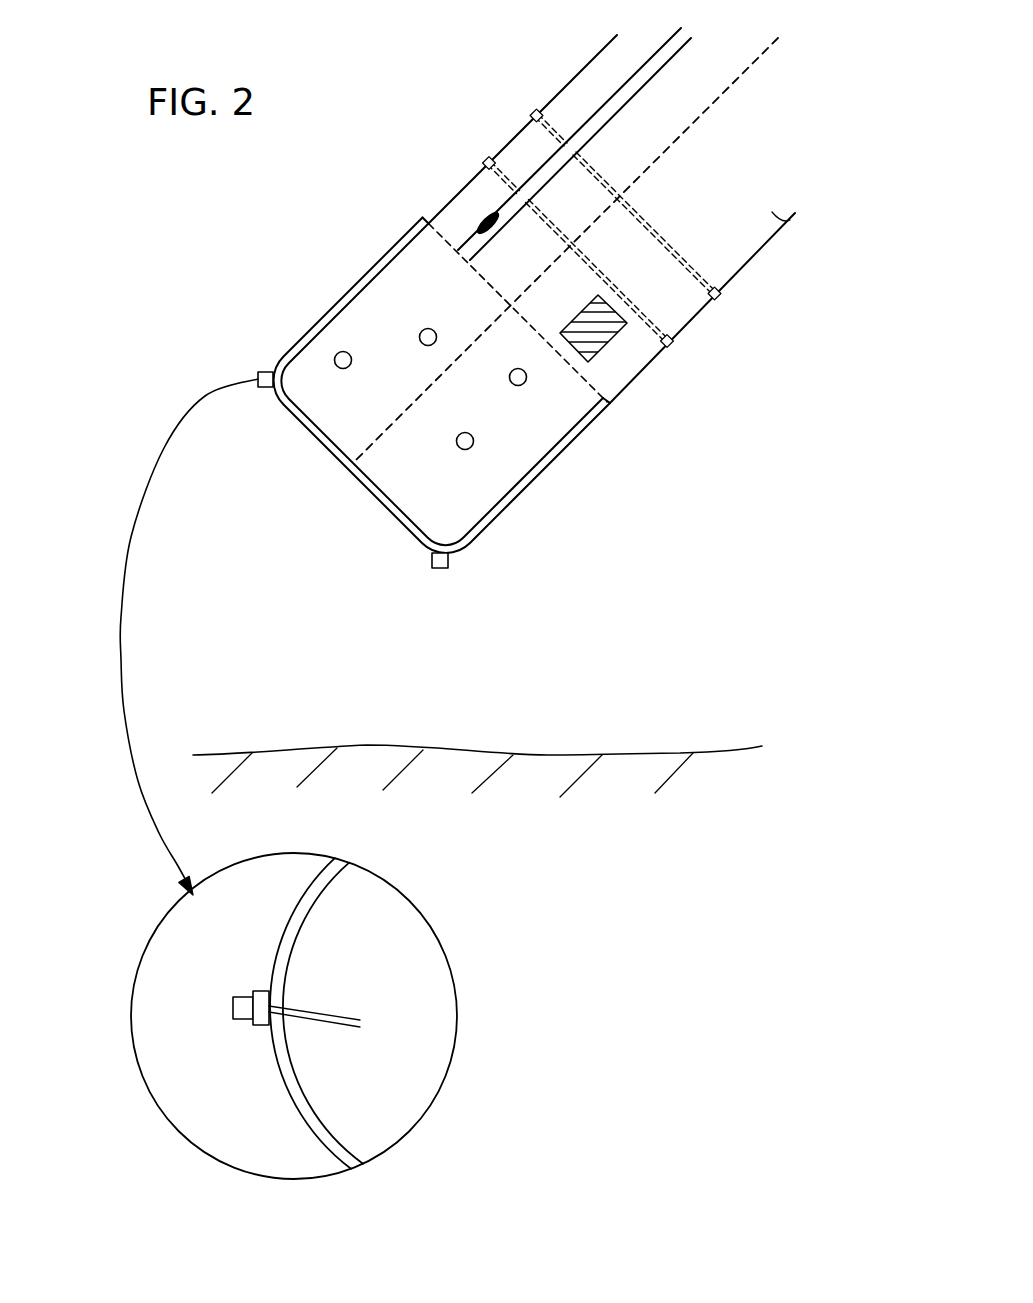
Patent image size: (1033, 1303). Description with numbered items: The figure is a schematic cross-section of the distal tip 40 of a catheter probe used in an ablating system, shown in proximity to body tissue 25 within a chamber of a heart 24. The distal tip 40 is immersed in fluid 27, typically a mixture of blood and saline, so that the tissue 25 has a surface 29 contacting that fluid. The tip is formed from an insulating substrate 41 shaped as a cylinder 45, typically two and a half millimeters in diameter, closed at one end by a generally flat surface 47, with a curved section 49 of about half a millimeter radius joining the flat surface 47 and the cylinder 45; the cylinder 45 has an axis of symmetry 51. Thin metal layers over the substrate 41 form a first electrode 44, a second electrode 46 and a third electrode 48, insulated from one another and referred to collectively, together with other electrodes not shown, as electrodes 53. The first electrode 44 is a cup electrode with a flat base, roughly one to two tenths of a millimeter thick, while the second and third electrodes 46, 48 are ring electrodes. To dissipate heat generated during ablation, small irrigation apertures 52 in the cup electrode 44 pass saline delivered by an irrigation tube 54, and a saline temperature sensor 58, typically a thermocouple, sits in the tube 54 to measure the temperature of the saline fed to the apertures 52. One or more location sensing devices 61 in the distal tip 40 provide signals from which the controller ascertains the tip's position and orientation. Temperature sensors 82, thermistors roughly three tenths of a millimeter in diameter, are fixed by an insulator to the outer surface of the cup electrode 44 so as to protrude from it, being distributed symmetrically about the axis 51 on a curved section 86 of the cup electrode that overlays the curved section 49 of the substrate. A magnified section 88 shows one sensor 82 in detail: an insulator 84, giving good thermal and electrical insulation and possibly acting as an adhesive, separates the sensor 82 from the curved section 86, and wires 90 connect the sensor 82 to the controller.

The heart 24 is at (728, 647).
The body tissue 25 is at (617, 780).
The fluid 27 is at (524, 660).
The surface 29 is at (720, 750).
The distal tip 40 is at (172, 210).
The insulating substrate 41 is at (745, 262).
The first electrode 44 is at (550, 460).
The cylinder 45 is at (776, 218).
The second electrode 46 is at (671, 346).
The flat surface 47 is at (328, 444).
The third electrode 48 is at (719, 297).
The curved section 49 is at (283, 400).
The axis of symmetry 51 is at (722, 103).
The irrigation apertures 52 is at (420, 335).
The electrodes 53 is at (403, 138).
The irrigation tube 54 is at (598, 122).
The saline temperature sensor 58 is at (486, 220).
The location sensing devices 61 is at (590, 361).
The temperature sensors 82 is at (258, 374).
The insulator 84 is at (262, 991).
The curved section 86 is at (314, 910).
The magnified section 88 is at (445, 1075).
The wires 90 is at (315, 1015).